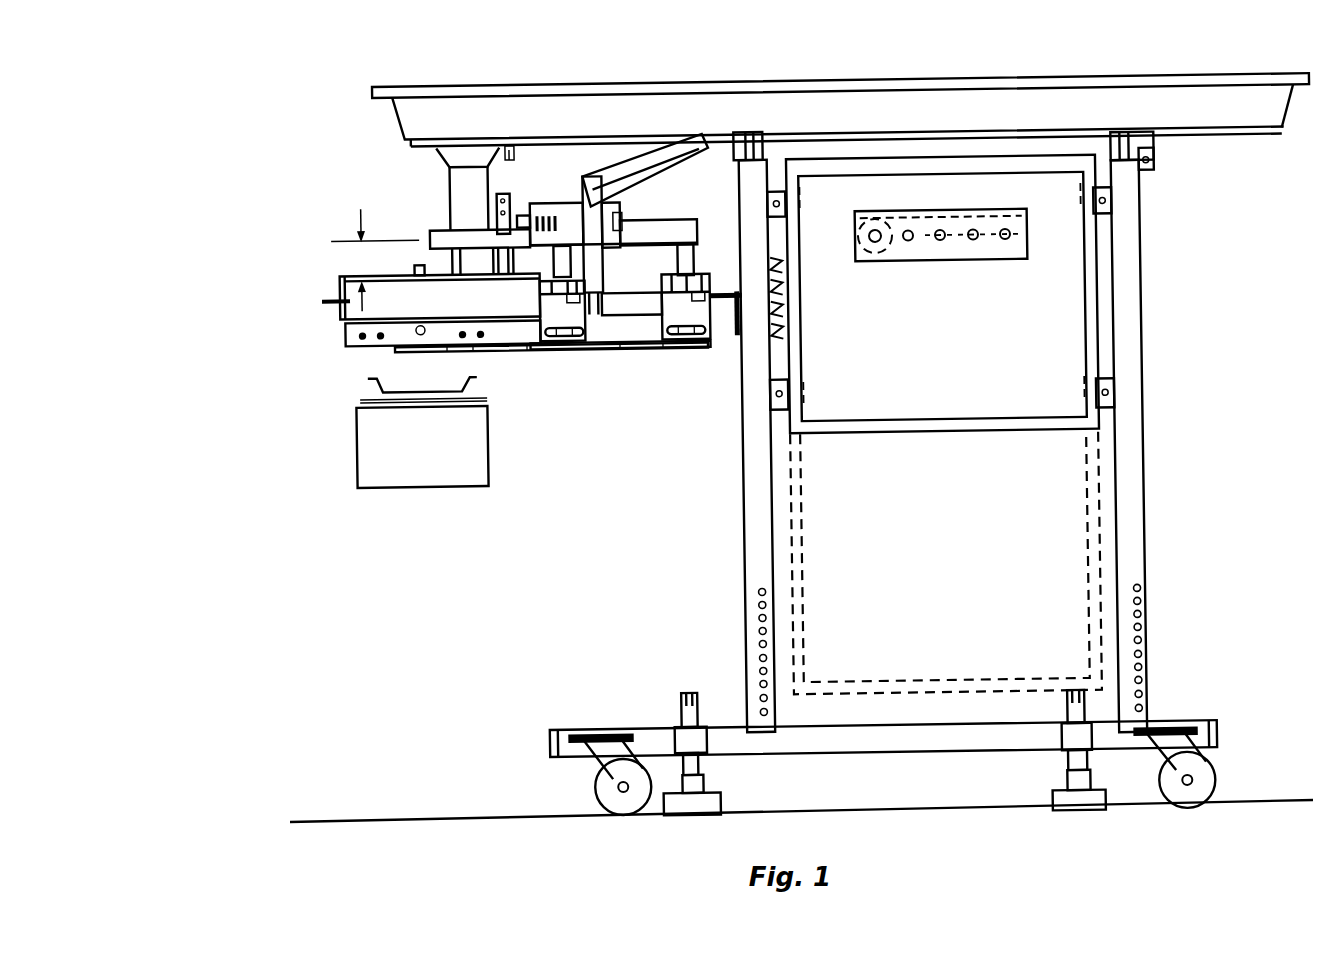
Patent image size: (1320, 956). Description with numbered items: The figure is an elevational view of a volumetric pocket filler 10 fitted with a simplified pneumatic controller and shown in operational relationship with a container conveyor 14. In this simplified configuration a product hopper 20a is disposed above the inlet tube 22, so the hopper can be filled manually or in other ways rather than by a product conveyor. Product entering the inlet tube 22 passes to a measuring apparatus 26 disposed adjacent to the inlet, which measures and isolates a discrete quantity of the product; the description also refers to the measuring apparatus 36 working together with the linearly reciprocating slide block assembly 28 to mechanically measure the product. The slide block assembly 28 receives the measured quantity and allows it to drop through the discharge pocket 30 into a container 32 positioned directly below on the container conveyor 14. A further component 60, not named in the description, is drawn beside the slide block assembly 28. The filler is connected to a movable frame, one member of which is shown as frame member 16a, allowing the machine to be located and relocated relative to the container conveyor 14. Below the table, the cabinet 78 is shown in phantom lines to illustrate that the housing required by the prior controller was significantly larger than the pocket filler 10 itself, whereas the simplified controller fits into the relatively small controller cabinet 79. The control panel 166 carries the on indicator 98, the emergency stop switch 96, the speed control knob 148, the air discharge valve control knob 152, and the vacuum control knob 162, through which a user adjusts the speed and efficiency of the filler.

The volumetric pocket filler 10 is at (230, 262).
The container conveyor 14 is at (372, 452).
The frame leg 16a is at (1135, 477).
The product hopper 20a is at (795, 110).
The inlet tube 22 is at (472, 192).
The measuring apparatus 26 is at (432, 240).
The slide block assembly 28 is at (447, 298).
The discharge pocket 30 is at (405, 350).
The container 32 is at (372, 385).
The measuring apparatus 36 is at (656, 232).
The slide carriage 60 is at (630, 300).
The cabinet 78 is at (1042, 550).
The controller cabinet 79 is at (1022, 368).
The emergency stop switch 96 is at (873, 246).
The on indicator 98 is at (908, 228).
The speed control knob 148 is at (947, 243).
The air discharge valve control knob 152 is at (973, 227).
The vacuum control knob 162 is at (1005, 243).
The control panel 166 is at (865, 200).